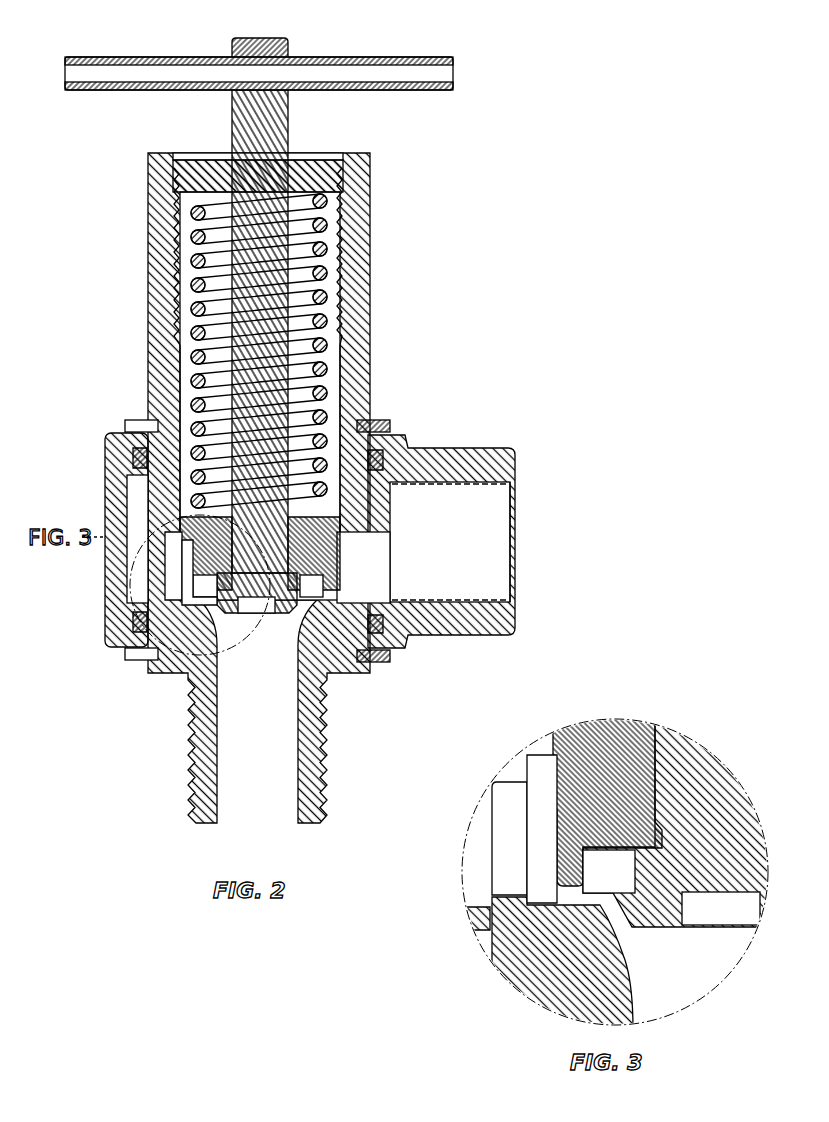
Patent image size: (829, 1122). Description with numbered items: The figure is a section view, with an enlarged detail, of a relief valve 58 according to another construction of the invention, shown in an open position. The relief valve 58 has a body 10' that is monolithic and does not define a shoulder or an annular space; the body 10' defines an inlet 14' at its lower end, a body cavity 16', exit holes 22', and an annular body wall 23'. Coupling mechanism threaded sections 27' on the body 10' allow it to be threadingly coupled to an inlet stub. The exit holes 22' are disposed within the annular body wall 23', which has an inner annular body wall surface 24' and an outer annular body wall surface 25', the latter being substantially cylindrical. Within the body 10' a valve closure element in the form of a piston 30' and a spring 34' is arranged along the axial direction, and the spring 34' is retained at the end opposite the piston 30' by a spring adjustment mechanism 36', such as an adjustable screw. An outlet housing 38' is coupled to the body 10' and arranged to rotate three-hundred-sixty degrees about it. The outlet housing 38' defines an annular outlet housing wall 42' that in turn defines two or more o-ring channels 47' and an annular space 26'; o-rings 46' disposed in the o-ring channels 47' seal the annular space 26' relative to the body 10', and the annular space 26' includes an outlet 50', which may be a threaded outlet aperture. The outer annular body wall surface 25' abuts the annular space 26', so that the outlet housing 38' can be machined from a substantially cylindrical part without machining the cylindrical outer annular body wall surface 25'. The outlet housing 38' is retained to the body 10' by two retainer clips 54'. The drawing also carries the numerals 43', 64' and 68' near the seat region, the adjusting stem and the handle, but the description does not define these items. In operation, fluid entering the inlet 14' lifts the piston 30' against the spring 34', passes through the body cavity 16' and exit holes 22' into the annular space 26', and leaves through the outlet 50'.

In FIG. 2, the body 10' is at (293, 488).
In FIG. 2, the inlet 14' is at (217, 760).
In FIG. 3, the inlet 14' is at (626, 865).
In FIG. 2, the body cavity 16' is at (290, 636).
In FIG. 3, the body cavity 16' is at (528, 798).
In FIG. 2, the exit holes 22' is at (117, 588).
In FIG. 3, the exit holes 22' is at (482, 838).
In FIG. 2, the annular body wall 23' is at (458, 546).
In FIG. 2, the inner annular body wall surface 24' is at (421, 511).
In FIG. 2, the outer annular body wall surface 25' is at (464, 557).
In FIG. 2, the annular space 26' is at (96, 539).
In FIG. 2, the coupling mechanism threaded sections 27' is at (223, 747).
In FIG. 2, the piston 30' is at (188, 567).
In FIG. 3, the piston 30' is at (676, 793).
In FIG. 2, the spring 34' is at (208, 351).
In FIG. 2, the spring adjustment mechanism 36' is at (293, 151).
In FIG. 2, the outlet housing 38' is at (474, 526).
In FIG. 2, the annular outlet housing wall 42' is at (94, 540).
In FIG. 2, the retainer 43' is at (112, 573).
In FIG. 2, the o-rings 46' is at (101, 517).
In FIG. 2, the o-ring channels 47' is at (124, 516).
In FIG. 2, the outlet 50' is at (485, 542).
In FIG. 2, the retainer clips 54' is at (404, 534).
In FIG. 2, the relief valve 58 is at (512, 271).
In FIG. 2, the adjustment stem 64' is at (223, 351).
In FIG. 2, the handle 68' is at (259, 51).